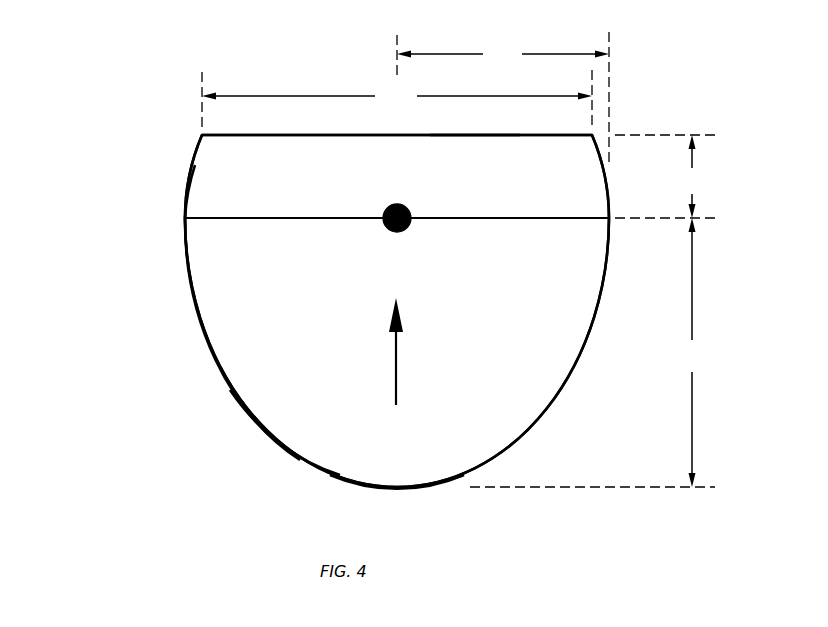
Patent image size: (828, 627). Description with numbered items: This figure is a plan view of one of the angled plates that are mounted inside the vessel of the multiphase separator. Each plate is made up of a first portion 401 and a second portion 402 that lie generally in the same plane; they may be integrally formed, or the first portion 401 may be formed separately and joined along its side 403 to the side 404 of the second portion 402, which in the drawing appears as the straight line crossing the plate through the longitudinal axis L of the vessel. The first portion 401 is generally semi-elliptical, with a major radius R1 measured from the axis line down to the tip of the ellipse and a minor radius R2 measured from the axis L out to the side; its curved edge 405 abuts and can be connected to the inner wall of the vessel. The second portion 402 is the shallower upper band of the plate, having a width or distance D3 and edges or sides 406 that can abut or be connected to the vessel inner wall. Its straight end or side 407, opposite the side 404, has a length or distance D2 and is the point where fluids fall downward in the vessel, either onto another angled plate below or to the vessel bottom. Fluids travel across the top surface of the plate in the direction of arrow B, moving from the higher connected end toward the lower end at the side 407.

The first portion 401 is at (206, 344).
The second portion 402 is at (186, 181).
The side of first portion 403 is at (248, 219).
The side of second portion 404 is at (300, 218).
The edge of first portion 405 is at (242, 405).
The edges or sides of second portion 406 is at (191, 160).
The end or side of second portion 407 is at (465, 136).
The longitudinal axis L is at (408, 229).
The arrow B is at (396, 352).
The length or distance D2 is at (397, 99).
The minor radius R2 is at (503, 98).
The width or distance D3 is at (666, 176).
The major radius R1 is at (592, 352).